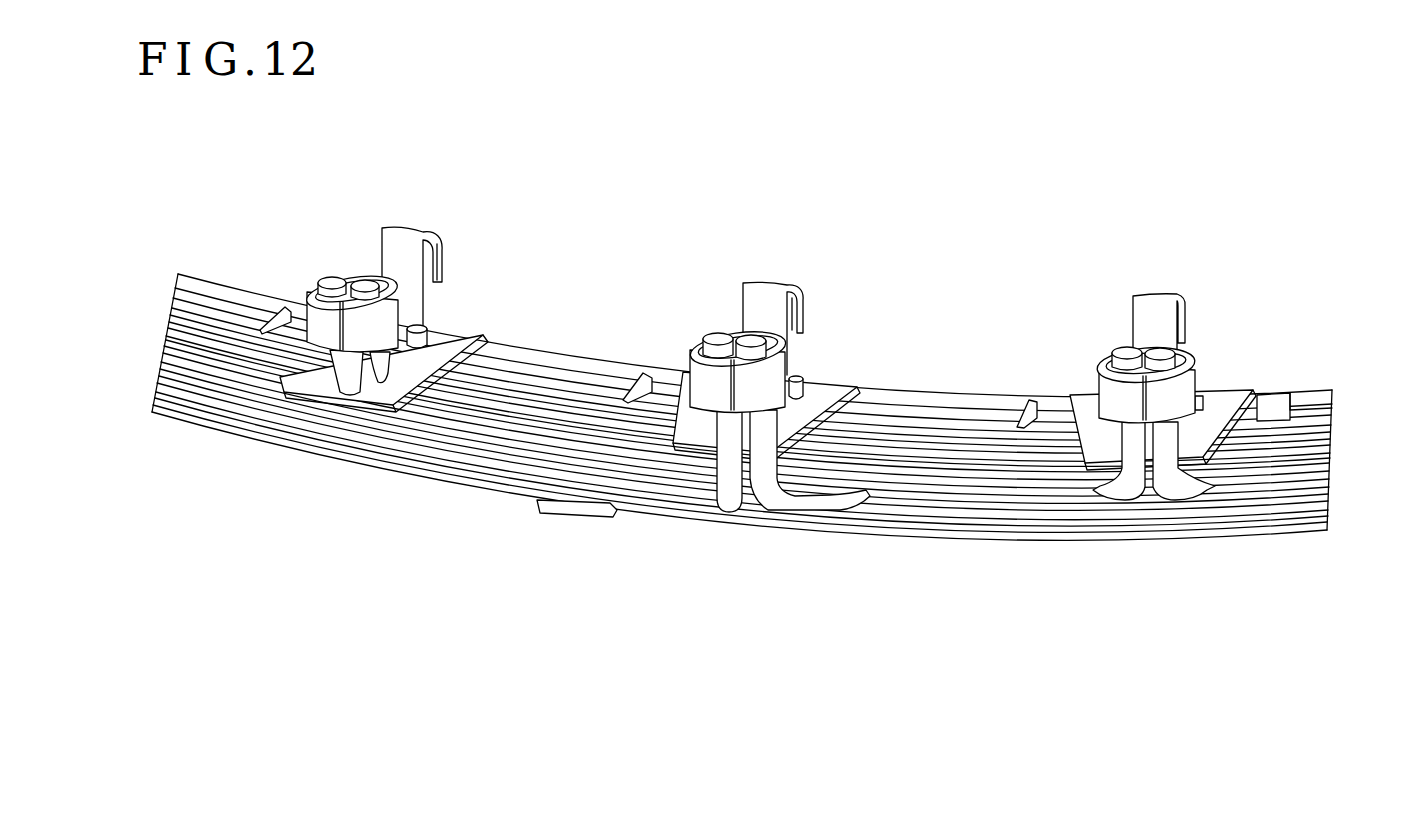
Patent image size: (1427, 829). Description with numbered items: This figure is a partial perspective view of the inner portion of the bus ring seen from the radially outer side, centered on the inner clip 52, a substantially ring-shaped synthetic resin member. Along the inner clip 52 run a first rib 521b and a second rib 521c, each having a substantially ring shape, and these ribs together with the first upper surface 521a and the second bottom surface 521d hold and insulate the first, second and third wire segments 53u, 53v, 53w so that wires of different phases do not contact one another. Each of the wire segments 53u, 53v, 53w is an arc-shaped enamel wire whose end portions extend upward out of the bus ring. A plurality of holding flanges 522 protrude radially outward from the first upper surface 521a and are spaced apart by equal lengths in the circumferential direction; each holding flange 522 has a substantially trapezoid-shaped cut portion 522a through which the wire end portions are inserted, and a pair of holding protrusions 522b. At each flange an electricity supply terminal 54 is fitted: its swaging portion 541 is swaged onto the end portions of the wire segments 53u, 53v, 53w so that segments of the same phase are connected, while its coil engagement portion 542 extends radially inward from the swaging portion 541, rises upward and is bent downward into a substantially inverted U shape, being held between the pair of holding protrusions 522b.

The inner clip 52 is at (778, 407).
The first upper surface 521a is at (1318, 399).
The first rib 521b is at (1325, 441).
The second rib 521c is at (1325, 480).
The second bottom surface 521d is at (1325, 518).
The holding flange 522 is at (1230, 395).
The cut portion 522a is at (710, 440).
The holding protrusion 522b is at (800, 383).
The first wire segment 53u is at (1158, 348).
The second wire segment 53v is at (360, 280).
The third wire segment 53w is at (750, 338).
The electricity supply terminal 54 is at (1152, 302).
The swaging portion 541 is at (698, 372).
The coil engagement portion 542 is at (770, 283).